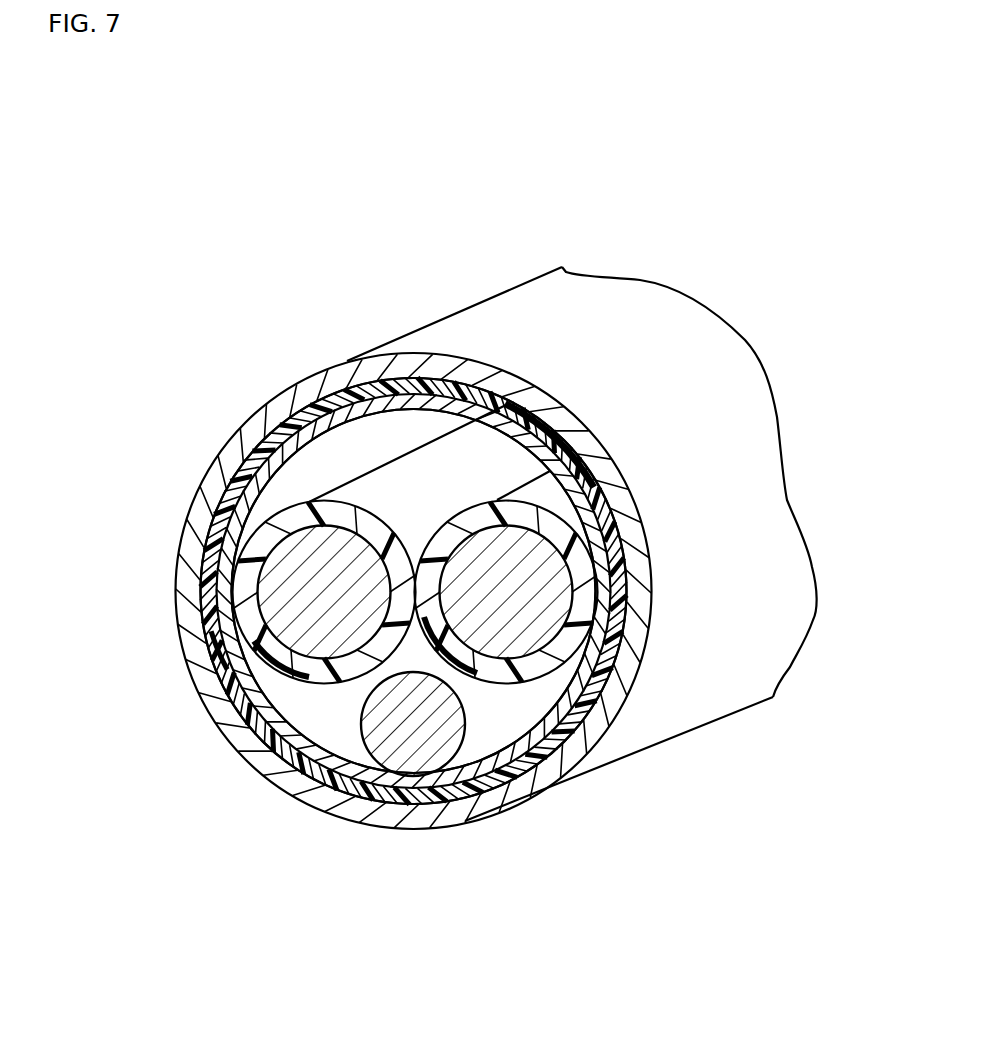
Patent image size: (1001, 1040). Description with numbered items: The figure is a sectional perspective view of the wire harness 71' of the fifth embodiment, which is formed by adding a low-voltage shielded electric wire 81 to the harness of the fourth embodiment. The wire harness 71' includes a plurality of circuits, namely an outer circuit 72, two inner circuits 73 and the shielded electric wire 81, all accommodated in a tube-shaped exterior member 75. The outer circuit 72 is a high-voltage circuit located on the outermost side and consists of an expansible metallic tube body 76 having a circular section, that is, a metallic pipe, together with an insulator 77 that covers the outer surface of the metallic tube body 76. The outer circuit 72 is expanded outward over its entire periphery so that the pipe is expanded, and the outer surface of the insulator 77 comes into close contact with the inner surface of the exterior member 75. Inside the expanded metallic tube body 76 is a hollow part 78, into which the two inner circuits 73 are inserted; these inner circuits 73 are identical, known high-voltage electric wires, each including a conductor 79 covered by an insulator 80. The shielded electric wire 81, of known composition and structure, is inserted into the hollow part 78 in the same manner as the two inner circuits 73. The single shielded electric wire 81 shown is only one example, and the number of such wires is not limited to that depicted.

The wire harness 71' is at (463, 454).
The outer circuit 72 is at (636, 136).
The inner circuits 73 is at (260, 962).
The exterior member 75 is at (268, 417).
The metallic tube body 76 is at (512, 423).
The insulator 77 is at (467, 390).
The hollow part 78 is at (368, 437).
The conductor 79 is at (303, 630).
The insulator 80 is at (328, 672).
The shielded electric wire 81 is at (412, 732).